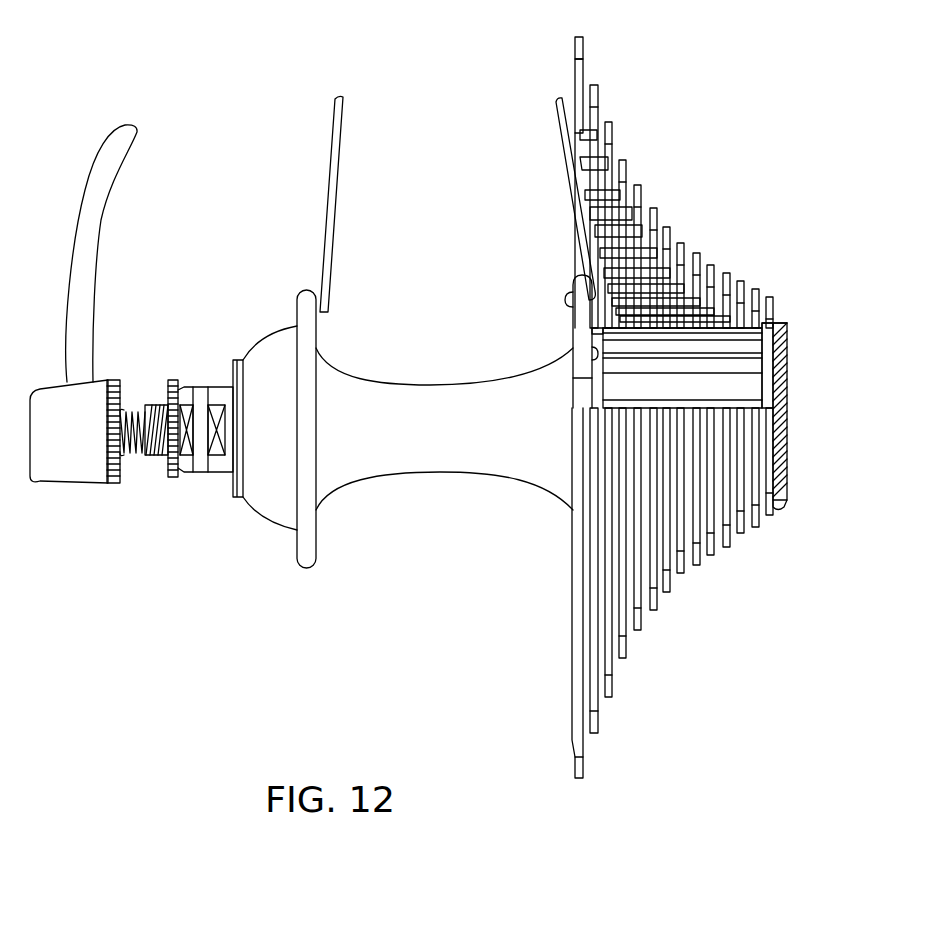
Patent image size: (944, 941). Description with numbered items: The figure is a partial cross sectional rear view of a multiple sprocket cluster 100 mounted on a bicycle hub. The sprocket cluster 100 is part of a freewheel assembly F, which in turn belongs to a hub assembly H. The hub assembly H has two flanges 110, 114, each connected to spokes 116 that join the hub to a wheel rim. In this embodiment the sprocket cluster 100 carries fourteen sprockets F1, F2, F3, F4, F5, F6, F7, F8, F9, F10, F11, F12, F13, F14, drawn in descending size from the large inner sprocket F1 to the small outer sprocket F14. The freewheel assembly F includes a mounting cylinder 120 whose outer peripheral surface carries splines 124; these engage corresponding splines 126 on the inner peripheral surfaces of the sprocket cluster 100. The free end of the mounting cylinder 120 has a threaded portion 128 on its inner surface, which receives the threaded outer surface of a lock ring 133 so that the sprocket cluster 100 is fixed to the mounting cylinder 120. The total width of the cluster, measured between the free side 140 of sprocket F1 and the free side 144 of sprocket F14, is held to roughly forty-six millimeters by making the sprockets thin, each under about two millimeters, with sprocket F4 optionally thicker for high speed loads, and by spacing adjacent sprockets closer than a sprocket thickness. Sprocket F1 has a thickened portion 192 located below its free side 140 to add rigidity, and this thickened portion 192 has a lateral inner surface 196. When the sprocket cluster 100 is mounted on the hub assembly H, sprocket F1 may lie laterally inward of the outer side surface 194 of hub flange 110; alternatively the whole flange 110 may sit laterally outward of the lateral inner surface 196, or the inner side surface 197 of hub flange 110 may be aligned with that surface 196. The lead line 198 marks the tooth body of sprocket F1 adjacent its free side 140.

The sprocket cluster 100 is at (670, 425).
The hub flange 110 is at (568, 316).
The hub flange 114 is at (310, 338).
The spokes 116 is at (336, 205).
The mounting cylinder 120 is at (774, 323).
The splines 124 is at (703, 387).
The splines 126 is at (724, 382).
The threaded portion 128 is at (768, 352).
The lock ring 133 is at (782, 385).
The free side 140 is at (575, 52).
The free side 144 is at (777, 507).
The thickened portion 192 is at (572, 737).
The outer side surface 194 is at (567, 347).
The lateral inner surface 196 is at (570, 668).
The inner side surface 197 is at (570, 378).
The first sprocket tooth body 198 is at (585, 73).
The hub assembly H is at (405, 402).
The freewheel assembly F is at (665, 425).
The sprocket F1 is at (571, 425).
The sprocket F2 is at (598, 735).
The sprocket F3 is at (612, 699).
The sprocket F4 is at (626, 660).
The sprocket F5 is at (641, 632).
The sprocket F6 is at (657, 612).
The sprocket F7 is at (670, 594).
The sprocket F8 is at (684, 575).
The sprocket F9 is at (700, 567).
The sprocket F10 is at (714, 557).
The sprocket F11 is at (729, 549).
The sprocket F12 is at (743, 535).
The sprocket F13 is at (758, 529).
The sprocket F14 is at (773, 517).